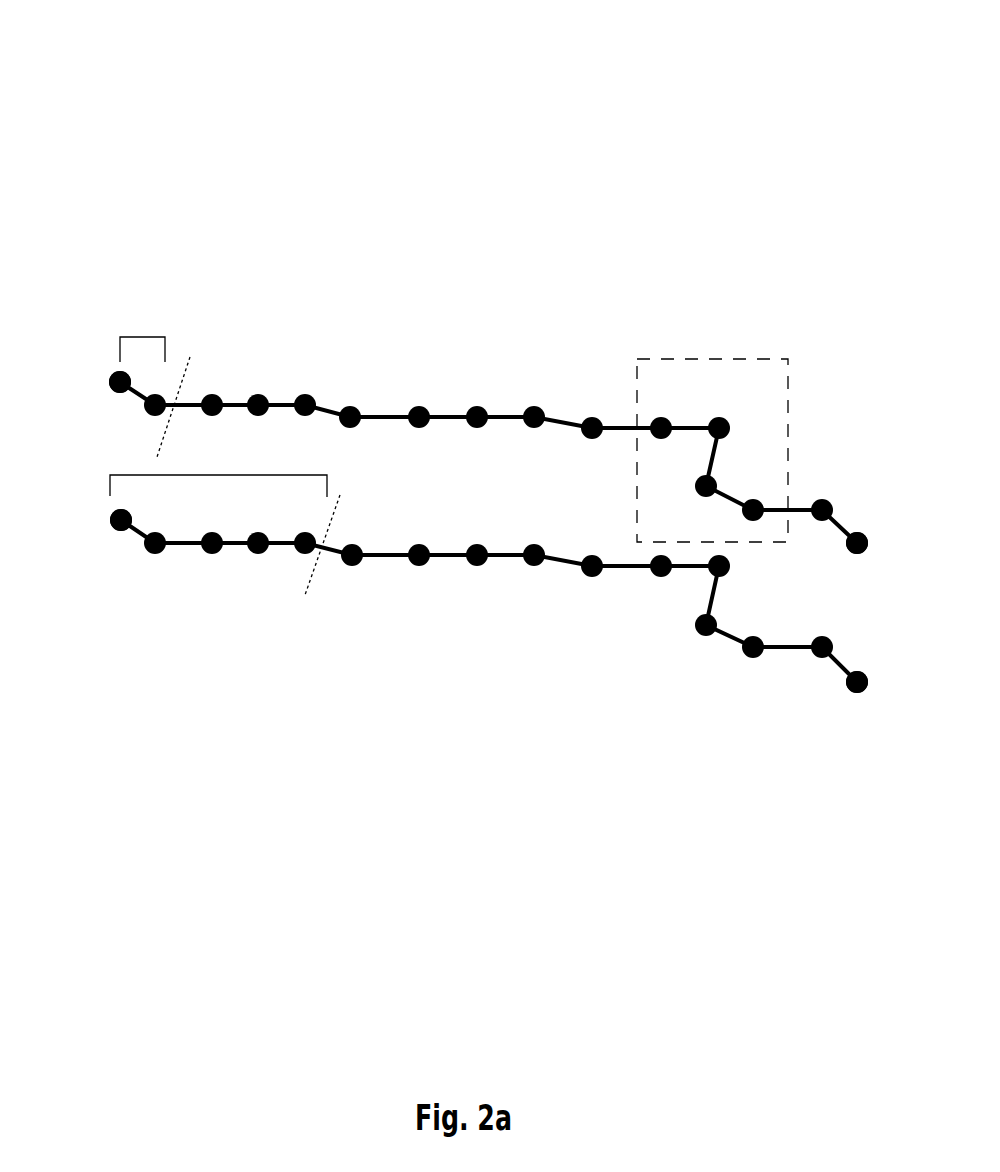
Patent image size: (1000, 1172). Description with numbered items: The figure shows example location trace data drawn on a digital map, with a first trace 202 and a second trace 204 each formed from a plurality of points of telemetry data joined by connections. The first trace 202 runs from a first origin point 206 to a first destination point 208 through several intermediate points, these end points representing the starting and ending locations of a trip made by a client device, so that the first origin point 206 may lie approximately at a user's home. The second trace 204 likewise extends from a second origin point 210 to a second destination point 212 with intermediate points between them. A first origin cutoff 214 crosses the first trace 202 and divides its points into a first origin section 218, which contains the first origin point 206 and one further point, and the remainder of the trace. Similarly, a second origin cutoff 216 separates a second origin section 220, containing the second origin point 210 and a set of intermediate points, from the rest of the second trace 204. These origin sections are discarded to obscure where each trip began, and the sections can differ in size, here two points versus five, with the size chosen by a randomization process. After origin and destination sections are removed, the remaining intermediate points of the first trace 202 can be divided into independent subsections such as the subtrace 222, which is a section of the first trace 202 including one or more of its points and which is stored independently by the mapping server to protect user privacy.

The first trace 202 is at (327, 348).
The second trace 204 is at (395, 602).
The first origin point 206 is at (98, 370).
The first destination point 208 is at (868, 513).
The second origin point 210 is at (98, 507).
The second destination point 212 is at (878, 672).
The first origin cutoff 214 is at (202, 358).
The second origin cutoff 216 is at (288, 613).
The first origin section 218 is at (143, 337).
The second origin section 220 is at (213, 475).
The subtrace 222 is at (775, 350).